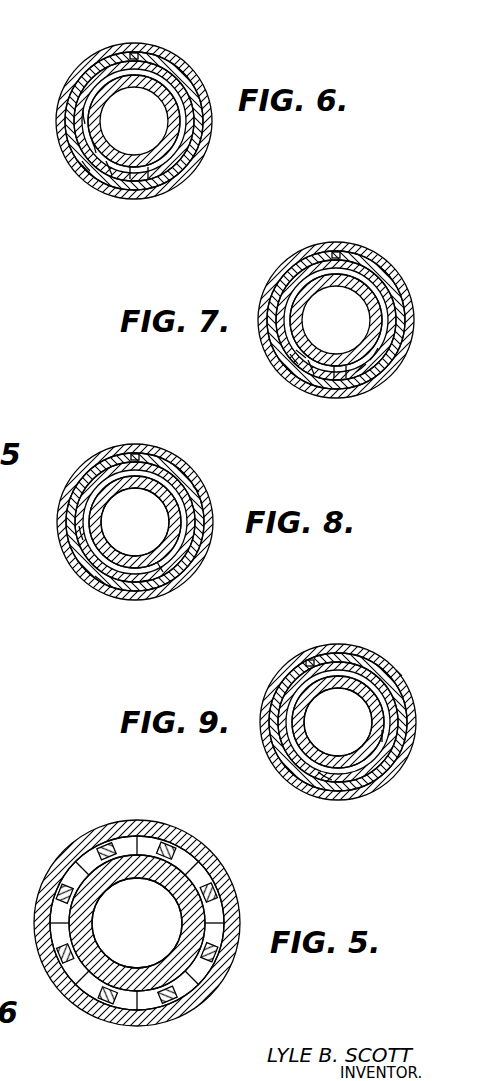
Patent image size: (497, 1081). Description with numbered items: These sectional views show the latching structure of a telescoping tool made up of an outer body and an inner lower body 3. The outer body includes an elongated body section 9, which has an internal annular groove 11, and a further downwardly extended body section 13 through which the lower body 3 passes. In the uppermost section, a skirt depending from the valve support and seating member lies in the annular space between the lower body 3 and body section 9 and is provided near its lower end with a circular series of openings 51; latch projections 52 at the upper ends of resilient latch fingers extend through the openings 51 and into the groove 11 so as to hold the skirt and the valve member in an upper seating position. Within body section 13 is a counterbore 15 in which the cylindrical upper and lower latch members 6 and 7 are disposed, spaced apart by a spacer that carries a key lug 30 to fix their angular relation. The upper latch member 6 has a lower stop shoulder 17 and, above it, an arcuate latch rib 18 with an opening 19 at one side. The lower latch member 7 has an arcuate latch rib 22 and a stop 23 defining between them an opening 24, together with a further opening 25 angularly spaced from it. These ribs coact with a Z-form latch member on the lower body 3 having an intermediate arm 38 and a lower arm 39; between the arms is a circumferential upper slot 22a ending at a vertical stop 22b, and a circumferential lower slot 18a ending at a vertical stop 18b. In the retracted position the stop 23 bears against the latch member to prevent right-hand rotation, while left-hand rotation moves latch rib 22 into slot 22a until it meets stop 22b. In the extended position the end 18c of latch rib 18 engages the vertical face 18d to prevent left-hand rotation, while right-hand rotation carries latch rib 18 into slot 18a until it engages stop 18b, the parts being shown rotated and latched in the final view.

In FIG. 6, the lower body 3 is at (154, 110).
In FIG. 7, the lower body 3 is at (357, 308).
In FIG. 8, the lower body 3 is at (150, 505).
In FIG. 9, the lower body 3 is at (367, 722).
In FIG. 5, the lower body 3 is at (137, 923).
In FIG. 6, the upper latch member 6 is at (61, 34).
In FIG. 7, the upper latch member 6 is at (336, 307).
In FIG. 8, the lower latch member 7 is at (216, 477).
In FIG. 9, the lower latch member 7 is at (414, 661).
In FIG. 5, the body section 9 is at (143, 923).
In FIG. 5, the internal annular groove 11 is at (140, 912).
In FIG. 6, the body section 13 is at (156, 121).
In FIG. 7, the body section 13 is at (357, 320).
In FIG. 8, the body section 13 is at (135, 512).
In FIG. 9, the body section 13 is at (338, 695).
In FIG. 6, the counterbore 15 is at (163, 36).
In FIG. 7, the counterbore 15 is at (351, 233).
In FIG. 8, the counterbore 15 is at (144, 433).
In FIG. 9, the counterbore 15 is at (304, 640).
In FIG. 6, the lower stop shoulder 17 is at (57, 158).
In FIG. 6, the latch rib 18 is at (140, 134).
In FIG. 7, the latch rib 18 is at (358, 320).
In FIG. 6, the lower slot 18a is at (145, 201).
In FIG. 7, the lower slot 18a is at (387, 392).
In FIG. 6, the vertical stop 18b is at (92, 197).
In FIG. 7, the vertical stop 18b is at (295, 397).
In FIG. 7, the end of latch rib 18c is at (260, 360).
In FIG. 6, the vertical face 18d is at (56, 184).
In FIG. 7, the vertical face 18d is at (266, 380).
In FIG. 6, the opening 19 is at (51, 129).
In FIG. 7, the opening 19 is at (400, 371).
In FIG. 8, the latch rib 22 is at (104, 533).
In FIG. 9, the latch rib 22 is at (338, 753).
In FIG. 8, the upper slot 22a is at (135, 529).
In FIG. 9, the upper slot 22a is at (338, 728).
In FIG. 8, the vertical stop 22b is at (186, 589).
In FIG. 8, the stop 23 is at (159, 522).
In FIG. 9, the stop 23 is at (346, 697).
In FIG. 8, the opening 24 is at (135, 505).
In FIG. 9, the opening 24 is at (322, 721).
In FIG. 8, the opening 25 is at (130, 613).
In FIG. 9, the opening 25 is at (415, 744).
In FIG. 5, the key lug 30 is at (137, 908).
In FIG. 8, the intermediate arm 38 is at (76, 600).
In FIG. 7, the lower arm 39 is at (347, 401).
In FIG. 5, the openings 51 is at (137, 933).
In FIG. 5, the latch projections 52 is at (171, 923).